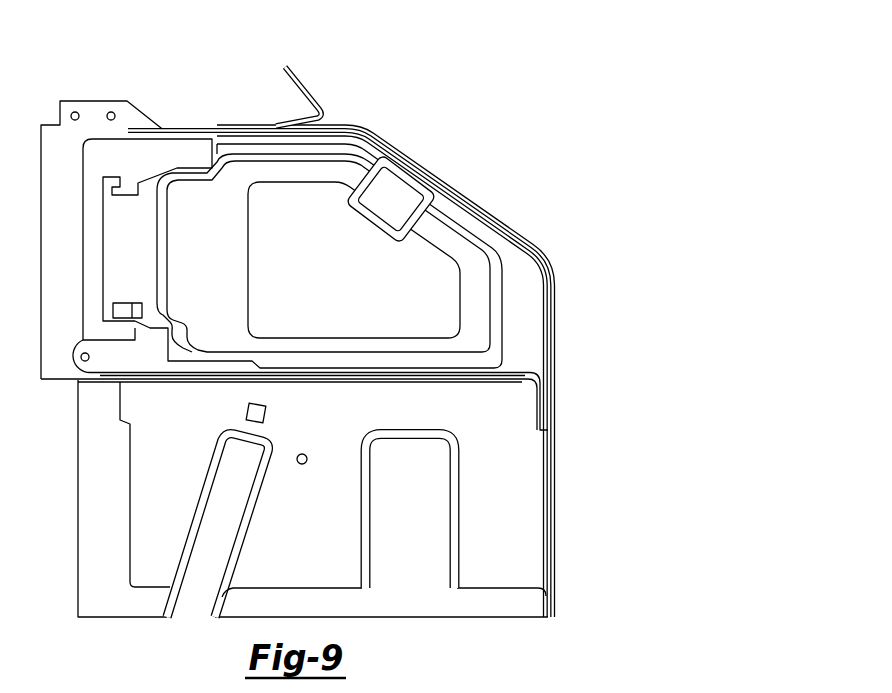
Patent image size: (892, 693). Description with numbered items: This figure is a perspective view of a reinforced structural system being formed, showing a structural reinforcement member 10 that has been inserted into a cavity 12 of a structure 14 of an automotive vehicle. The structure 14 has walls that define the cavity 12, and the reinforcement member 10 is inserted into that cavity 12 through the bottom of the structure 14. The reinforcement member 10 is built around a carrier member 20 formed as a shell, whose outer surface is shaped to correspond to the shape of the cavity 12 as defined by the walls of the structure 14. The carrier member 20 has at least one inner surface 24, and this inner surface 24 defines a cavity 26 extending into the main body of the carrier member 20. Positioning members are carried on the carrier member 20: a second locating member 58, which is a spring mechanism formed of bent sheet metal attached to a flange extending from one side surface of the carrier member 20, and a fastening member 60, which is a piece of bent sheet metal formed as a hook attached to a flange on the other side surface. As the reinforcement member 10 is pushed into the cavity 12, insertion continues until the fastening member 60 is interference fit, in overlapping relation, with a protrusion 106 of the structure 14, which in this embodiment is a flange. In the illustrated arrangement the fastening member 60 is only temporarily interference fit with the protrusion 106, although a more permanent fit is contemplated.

The structural reinforcement member 10 is at (207, 368).
The cavity 12 is at (490, 228).
The structure 14 is at (404, 137).
The carrier member 20 is at (222, 258).
The inner surface 24 is at (195, 241).
The cavity 26 is at (335, 297).
The second locating member 58 is at (444, 244).
The fastening member 60 is at (193, 152).
The protrusion 106 is at (146, 152).